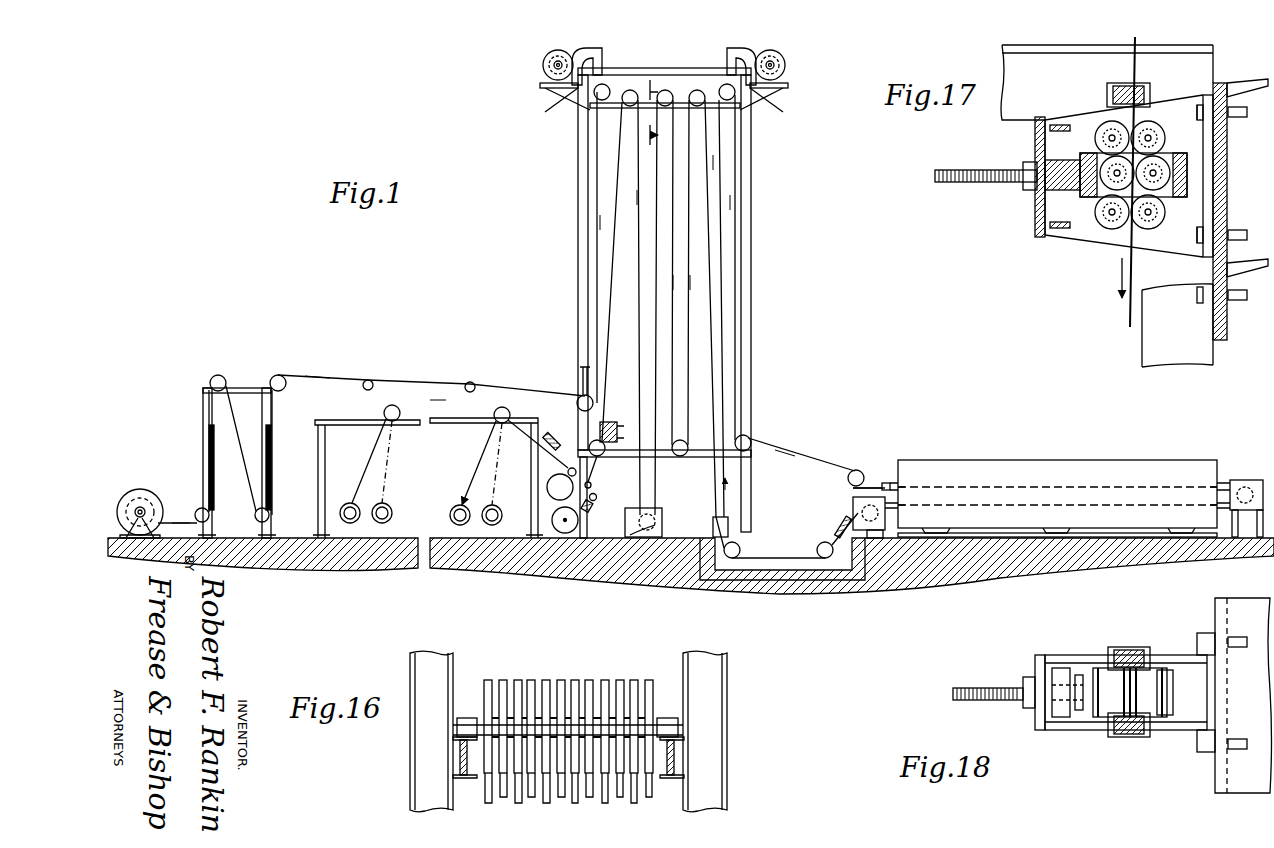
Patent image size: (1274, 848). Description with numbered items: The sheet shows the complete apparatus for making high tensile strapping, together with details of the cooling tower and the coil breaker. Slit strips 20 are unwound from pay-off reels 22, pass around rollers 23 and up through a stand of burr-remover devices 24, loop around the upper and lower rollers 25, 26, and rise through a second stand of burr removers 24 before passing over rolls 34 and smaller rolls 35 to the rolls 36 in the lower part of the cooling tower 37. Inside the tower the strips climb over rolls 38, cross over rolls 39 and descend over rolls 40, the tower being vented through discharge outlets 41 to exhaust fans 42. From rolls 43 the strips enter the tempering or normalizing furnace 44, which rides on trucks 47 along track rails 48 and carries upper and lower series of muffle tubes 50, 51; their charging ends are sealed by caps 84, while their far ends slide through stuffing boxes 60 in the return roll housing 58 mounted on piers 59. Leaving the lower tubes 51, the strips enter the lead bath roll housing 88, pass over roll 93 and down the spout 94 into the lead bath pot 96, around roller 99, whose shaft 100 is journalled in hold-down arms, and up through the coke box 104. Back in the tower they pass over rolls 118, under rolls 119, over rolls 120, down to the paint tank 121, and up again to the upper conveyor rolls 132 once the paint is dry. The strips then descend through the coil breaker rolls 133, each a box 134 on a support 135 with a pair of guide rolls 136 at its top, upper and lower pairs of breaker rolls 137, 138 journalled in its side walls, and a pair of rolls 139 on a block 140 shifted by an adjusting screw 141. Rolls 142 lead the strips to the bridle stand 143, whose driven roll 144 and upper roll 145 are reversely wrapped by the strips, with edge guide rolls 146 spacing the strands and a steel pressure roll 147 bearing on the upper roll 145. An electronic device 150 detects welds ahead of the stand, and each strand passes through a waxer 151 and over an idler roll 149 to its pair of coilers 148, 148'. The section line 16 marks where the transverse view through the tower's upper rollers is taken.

In FIG. 1, the section line 16 is at (648, 107).
In FIG. 1, the strip 20 is at (585, 188).
In FIG. 16, the strip 20 is at (486, 784).
In FIG. 17, the strip 20 is at (1126, 323).
In FIG. 18, the strip 20 is at (1125, 700).
In FIG. 1, the pay-off reel 22 is at (138, 489).
In FIG. 1, the roller 23 is at (200, 508).
In FIG. 1, the stand of burr-remover devices 24 is at (205, 428).
In FIG. 1, the upper roller 25 is at (218, 375).
In FIG. 1, the lower roller 26 is at (255, 515).
In FIG. 1, the roll 34 is at (280, 375).
In FIG. 1, the smaller roll 35 is at (370, 381).
In FIG. 1, the roll 36 is at (578, 400).
In FIG. 1, the cooling tower 37 is at (578, 237).
In FIG. 16, the cooling tower 37 is at (725, 691).
In FIG. 1, the roll 38 is at (604, 84).
In FIG. 1, the roll 39 is at (724, 84).
In FIG. 1, the roll 40 is at (751, 440).
In FIG. 1, the discharge outlet 41 is at (575, 96).
In FIG. 1, the exhaust fan 42 is at (543, 63).
In FIG. 1, the roll 43 is at (856, 470).
In FIG. 1, the tempering or normalizing furnace 44 is at (1062, 459).
In FIG. 1, the truck 47 is at (940, 530).
In FIG. 1, the track rail 48 is at (1114, 552).
In FIG. 1, the upper muffle tube 50 is at (898, 462).
In FIG. 1, the lower muffle tube 51 is at (905, 486).
In FIG. 1, the return roll housing 58 is at (1240, 480).
In FIG. 1, the pier 59 is at (1246, 538).
In FIG. 1, the stuffing box 60 is at (1253, 487).
In FIG. 1, the cap 84 is at (885, 483).
In FIG. 1, the lead bath roll housing 88 is at (882, 530).
In FIG. 1, the roll 93 is at (862, 510).
In FIG. 1, the spout 94 is at (848, 520).
In FIG. 1, the lead bath pot 96 is at (845, 576).
In FIG. 1, the roller 99 is at (733, 558).
In FIG. 1, the shaft 100 is at (825, 558).
In FIG. 1, the coke box 104 is at (714, 527).
In FIG. 1, the roll 118 is at (700, 103).
In FIG. 1, the roll 119 is at (682, 456).
In FIG. 1, the roll 120 is at (666, 90).
In FIG. 16, the roll 120 is at (546, 681).
In FIG. 1, the paint tank 121 is at (640, 540).
In FIG. 1, the upper conveyor roll 132 is at (624, 101).
In FIG. 1, the coil breaker rolls 133 is at (612, 422).
In FIG. 17, the coil breaker rolls 133 is at (1034, 225).
In FIG. 18, the coil breaker rolls 133 is at (1034, 716).
In FIG. 17, the box 134 is at (1085, 238).
In FIG. 18, the box 134 is at (1062, 731).
In FIG. 17, the support 135 is at (1228, 188).
In FIG. 18, the support 135 is at (1221, 615).
In FIG. 17, the guide roll 136 is at (1112, 85).
In FIG. 18, the guide roll 136 is at (1131, 649).
In FIG. 17, the upper breaker roll 137 is at (1100, 130).
In FIG. 18, the upper breaker roll 137 is at (1155, 702).
In FIG. 17, the lower breaker roll 138 is at (1112, 230).
In FIG. 17, the roll 139 is at (1162, 160).
In FIG. 18, the roll 139 is at (1172, 690).
In FIG. 17, the block 140 is at (1190, 182).
In FIG. 18, the block 140 is at (1084, 672).
In FIG. 17, the adjusting screw 141 is at (962, 184).
In FIG. 18, the adjusting screw 141 is at (980, 687).
In FIG. 1, the roll 142 is at (590, 444).
In FIG. 1, the bridle stand 143 is at (566, 524).
In FIG. 1, the driven roll 144 is at (556, 528).
In FIG. 1, the upper roll 145 is at (560, 487).
In FIG. 1, the edge guide roll 146 is at (596, 486).
In FIG. 1, the steel pressure roll 147 is at (568, 472).
In FIG. 1, the coiler 148 is at (402, 551).
In FIG. 1, the coiler 148' is at (443, 550).
In FIG. 1, the idler roll 149 is at (396, 406).
In FIG. 1, the electronic device 150 is at (593, 503).
In FIG. 1, the waxer 151 is at (545, 447).